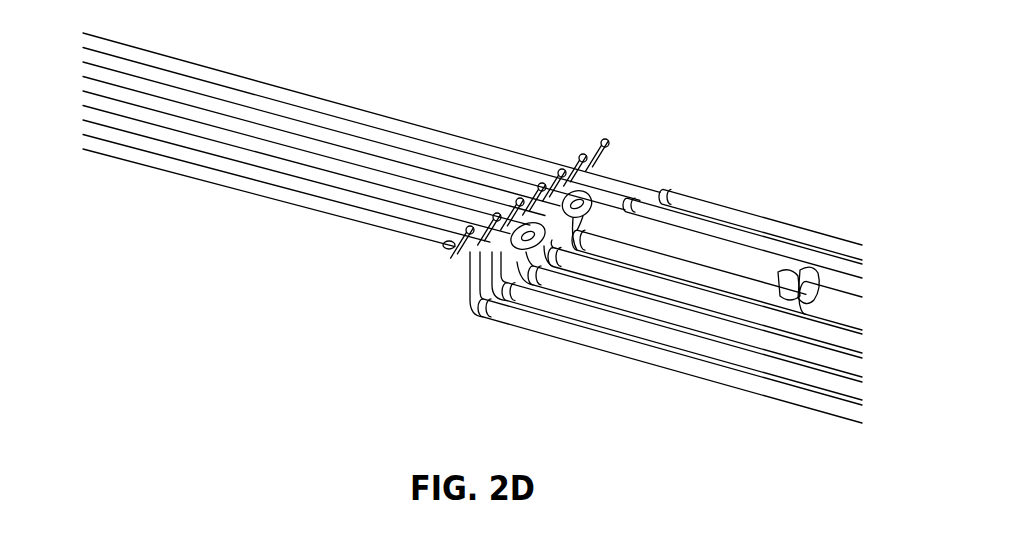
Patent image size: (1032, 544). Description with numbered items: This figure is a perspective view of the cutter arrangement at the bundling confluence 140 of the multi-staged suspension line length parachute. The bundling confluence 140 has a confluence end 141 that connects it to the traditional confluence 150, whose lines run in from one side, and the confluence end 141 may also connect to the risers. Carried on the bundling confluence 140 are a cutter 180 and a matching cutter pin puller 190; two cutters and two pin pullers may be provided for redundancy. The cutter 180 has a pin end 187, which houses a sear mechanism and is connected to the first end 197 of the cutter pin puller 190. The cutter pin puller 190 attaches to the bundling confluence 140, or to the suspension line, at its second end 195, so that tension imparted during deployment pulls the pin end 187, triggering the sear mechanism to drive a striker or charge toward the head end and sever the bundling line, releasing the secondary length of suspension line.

The bundling confluence 140 is at (716, 84).
The traditional confluence 150 is at (248, 191).
The confluence end 141 is at (460, 262).
The second end 195 is at (548, 262).
The cutter pin puller 190 is at (680, 258).
The first end 197 is at (783, 283).
The pin end 187 is at (812, 272).
The cutter 180 is at (850, 278).